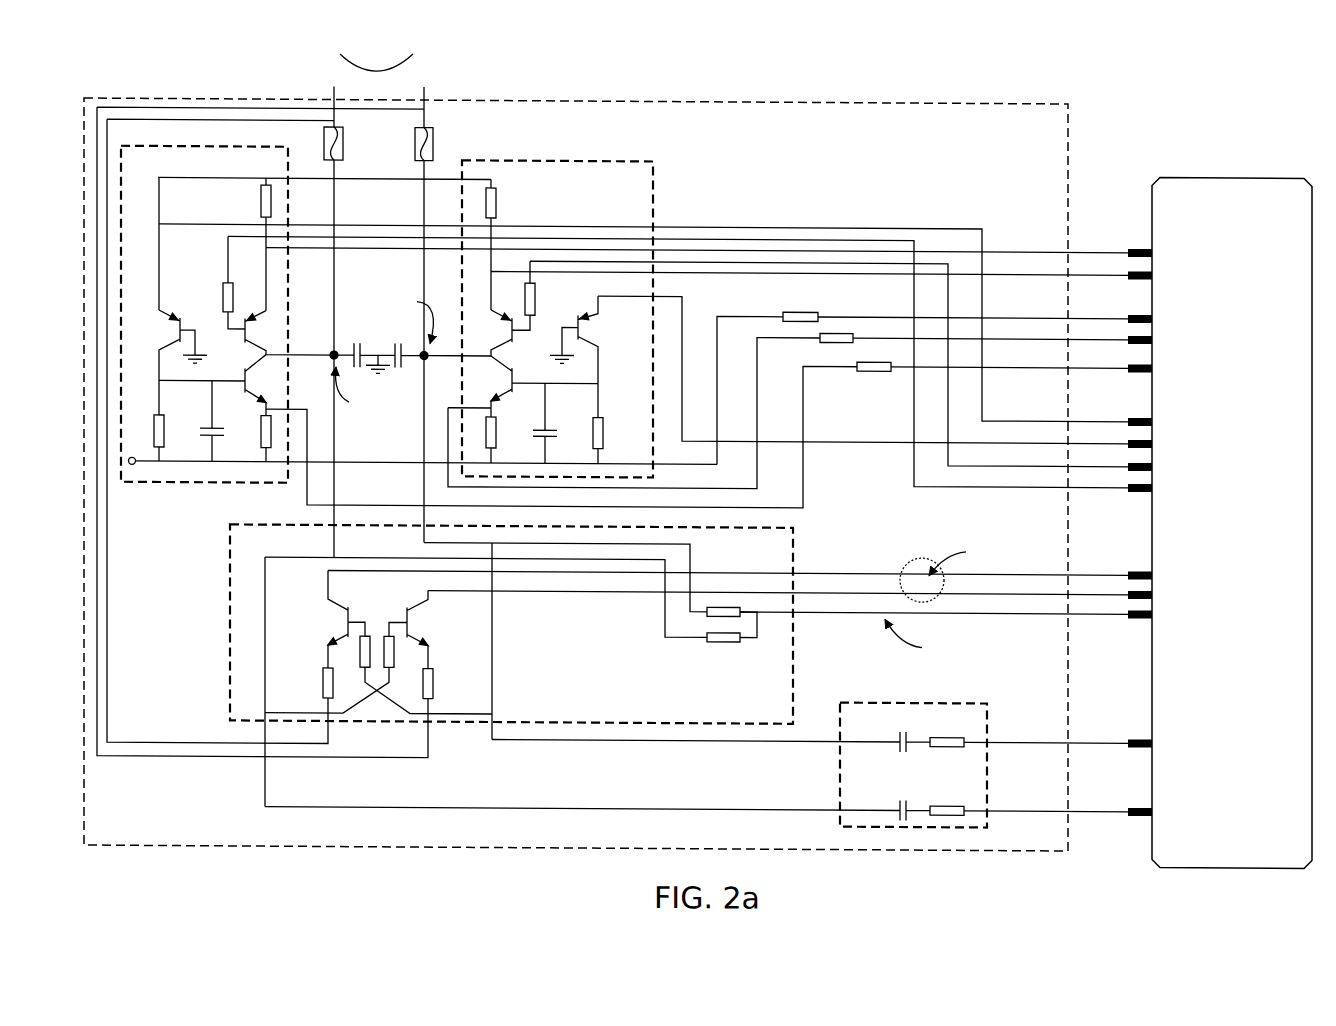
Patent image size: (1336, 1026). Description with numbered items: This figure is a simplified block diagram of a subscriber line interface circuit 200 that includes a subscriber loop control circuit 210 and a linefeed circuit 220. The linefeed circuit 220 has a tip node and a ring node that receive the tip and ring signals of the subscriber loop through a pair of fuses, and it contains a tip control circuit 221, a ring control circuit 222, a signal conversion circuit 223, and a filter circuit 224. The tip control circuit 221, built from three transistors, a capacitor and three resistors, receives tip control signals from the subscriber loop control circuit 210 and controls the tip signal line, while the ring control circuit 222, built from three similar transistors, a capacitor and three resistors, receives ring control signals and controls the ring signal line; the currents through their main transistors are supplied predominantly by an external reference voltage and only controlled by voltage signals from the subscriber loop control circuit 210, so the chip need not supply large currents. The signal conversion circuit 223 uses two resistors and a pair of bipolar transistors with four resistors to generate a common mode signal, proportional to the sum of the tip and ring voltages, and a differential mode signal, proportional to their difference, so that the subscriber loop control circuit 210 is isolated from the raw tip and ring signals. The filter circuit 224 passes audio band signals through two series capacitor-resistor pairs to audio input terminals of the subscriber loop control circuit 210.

The subscriber line interface circuit 200 is at (1186, 104).
The subscriber loop control circuit 210 is at (1205, 474).
The linefeed circuit 220 is at (730, 75).
The tip control circuit 221 is at (521, 154).
The ring control circuit 222 is at (245, 141).
The signal conversion circuit 223 is at (229, 584).
The filter circuit 224 is at (839, 776).